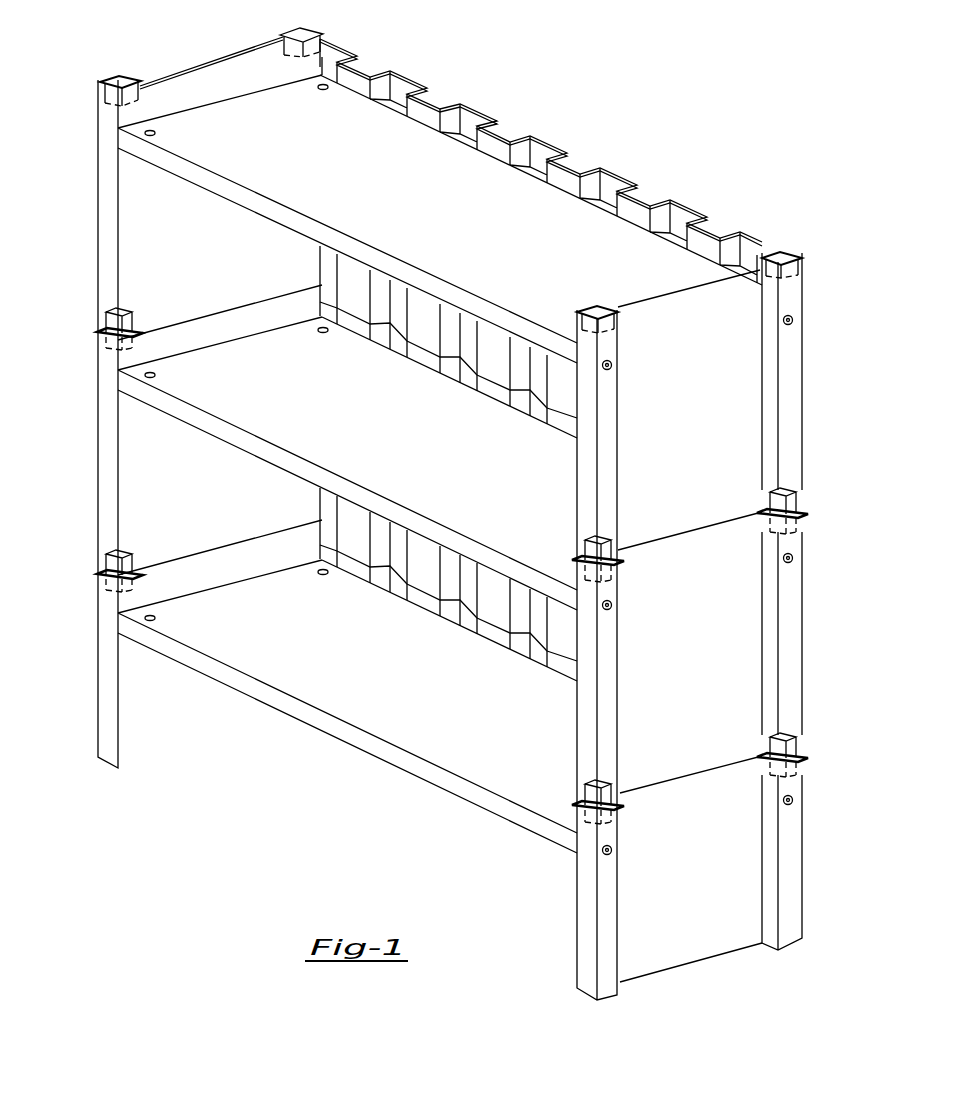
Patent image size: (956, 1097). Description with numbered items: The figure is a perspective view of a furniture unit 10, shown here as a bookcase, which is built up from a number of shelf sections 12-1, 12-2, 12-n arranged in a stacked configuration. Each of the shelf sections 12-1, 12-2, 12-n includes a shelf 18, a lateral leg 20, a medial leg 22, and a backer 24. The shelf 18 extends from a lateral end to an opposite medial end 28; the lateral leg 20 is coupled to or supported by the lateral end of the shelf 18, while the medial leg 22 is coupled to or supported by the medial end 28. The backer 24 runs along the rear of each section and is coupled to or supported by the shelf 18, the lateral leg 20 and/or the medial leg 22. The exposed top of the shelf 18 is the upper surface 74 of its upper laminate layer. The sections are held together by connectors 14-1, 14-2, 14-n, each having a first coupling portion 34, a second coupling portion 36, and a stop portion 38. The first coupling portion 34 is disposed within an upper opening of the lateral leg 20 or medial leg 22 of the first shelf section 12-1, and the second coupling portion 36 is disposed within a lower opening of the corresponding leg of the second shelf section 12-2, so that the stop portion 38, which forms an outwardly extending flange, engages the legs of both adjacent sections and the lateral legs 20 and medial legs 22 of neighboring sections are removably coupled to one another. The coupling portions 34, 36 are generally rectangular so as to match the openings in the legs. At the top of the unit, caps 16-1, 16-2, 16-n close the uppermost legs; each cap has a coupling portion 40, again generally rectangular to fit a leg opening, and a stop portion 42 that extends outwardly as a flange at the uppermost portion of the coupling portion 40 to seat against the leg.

The furniture unit 10 is at (660, 106).
The first shelf section 12-1 is at (806, 858).
The second shelf section 12-2 is at (806, 588).
The shelf section 12-n is at (806, 396).
The connector 14-1 is at (97, 331).
The connector 14-2 is at (622, 800).
The connector 14-n is at (800, 757).
The cap 16-1 is at (118, 76).
The cap 16-2 is at (602, 318).
The cap 16-n is at (790, 258).
The shelf 18 is at (210, 190).
The lateral leg 20 is at (577, 468).
The medial leg 22 is at (98, 240).
The backer 24 is at (481, 108).
The medial end 28 is at (237, 92).
The first coupling portion 34 is at (105, 600).
The second coupling portion 36 is at (120, 552).
The stop portion 38 is at (136, 579).
The coupling portion 40 is at (110, 103).
The stop portion 42 is at (104, 80).
The upper surface 74 is at (394, 186).